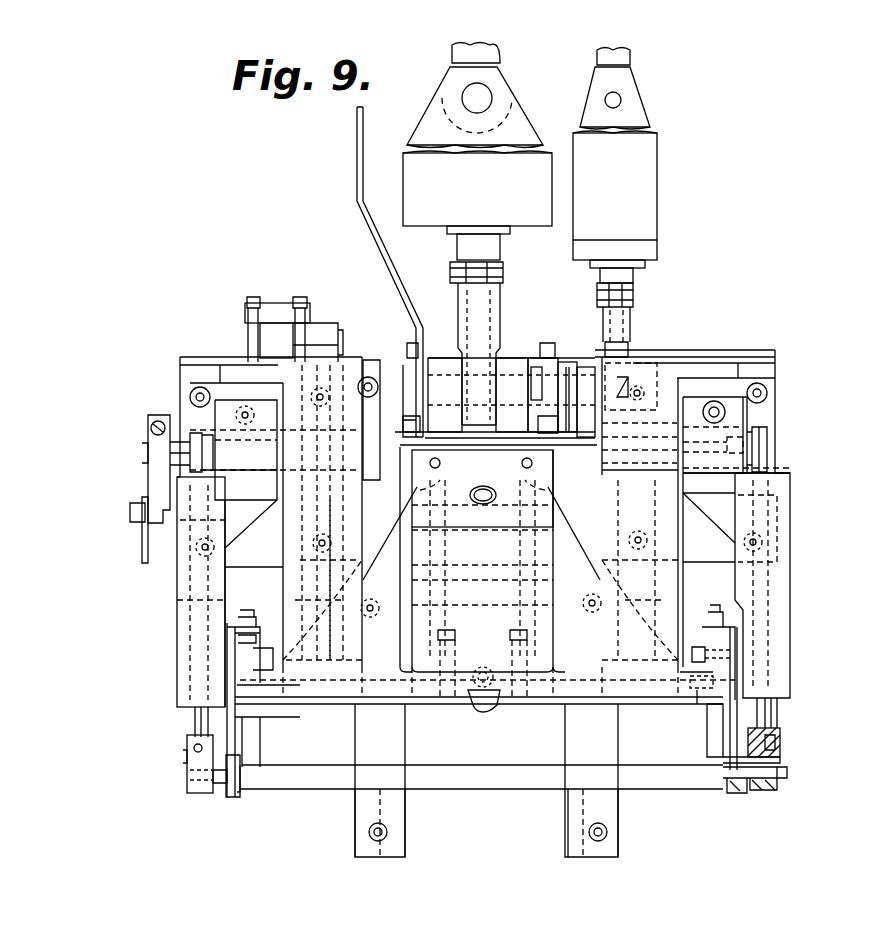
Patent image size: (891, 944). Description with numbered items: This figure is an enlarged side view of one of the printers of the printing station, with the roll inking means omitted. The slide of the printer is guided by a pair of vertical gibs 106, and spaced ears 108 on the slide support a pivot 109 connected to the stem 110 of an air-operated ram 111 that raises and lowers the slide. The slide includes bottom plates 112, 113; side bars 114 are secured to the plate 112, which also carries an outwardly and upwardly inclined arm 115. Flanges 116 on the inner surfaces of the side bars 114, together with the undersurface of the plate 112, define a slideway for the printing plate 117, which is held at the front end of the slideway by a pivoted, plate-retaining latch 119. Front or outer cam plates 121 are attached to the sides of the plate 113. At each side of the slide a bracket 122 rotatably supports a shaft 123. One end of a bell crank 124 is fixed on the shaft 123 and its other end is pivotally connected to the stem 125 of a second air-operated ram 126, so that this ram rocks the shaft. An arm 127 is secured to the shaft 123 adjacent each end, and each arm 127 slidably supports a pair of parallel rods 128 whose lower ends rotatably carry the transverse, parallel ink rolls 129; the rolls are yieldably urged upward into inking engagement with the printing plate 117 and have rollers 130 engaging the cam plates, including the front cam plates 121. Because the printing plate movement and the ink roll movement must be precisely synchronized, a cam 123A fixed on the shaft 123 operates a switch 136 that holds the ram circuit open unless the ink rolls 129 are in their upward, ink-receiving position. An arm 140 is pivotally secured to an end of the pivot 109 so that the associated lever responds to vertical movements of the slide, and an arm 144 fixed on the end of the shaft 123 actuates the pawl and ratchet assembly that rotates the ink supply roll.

The vertical gibs 106 is at (573, 812).
The spaced ears 108 is at (447, 362).
The pivot 109 is at (547, 378).
The stem 110 is at (500, 257).
The air-operated ram 111 is at (433, 212).
The bottom plate 112 is at (697, 690).
The bottom plate 113 is at (673, 687).
The side bars 114 is at (720, 717).
The inclined arm 115 is at (497, 473).
The flanges 116 is at (760, 728).
The printing plate 117 is at (310, 753).
The plate-retaining latch 119 is at (488, 707).
The front cam plates 121 is at (232, 732).
The bracket 122 is at (233, 360).
The shaft 123 is at (585, 455).
The cam 123A is at (360, 360).
The bell crank 124 is at (640, 345).
The stem 125 is at (627, 278).
The air-operated ram 126 is at (642, 210).
The arm 127 is at (178, 623).
The parallel rods 128 is at (763, 457).
The ink rolls 129 is at (332, 780).
The rollers 130 is at (237, 795).
The switch 136 is at (328, 327).
The arm 140 is at (372, 237).
The arm 144 is at (157, 485).